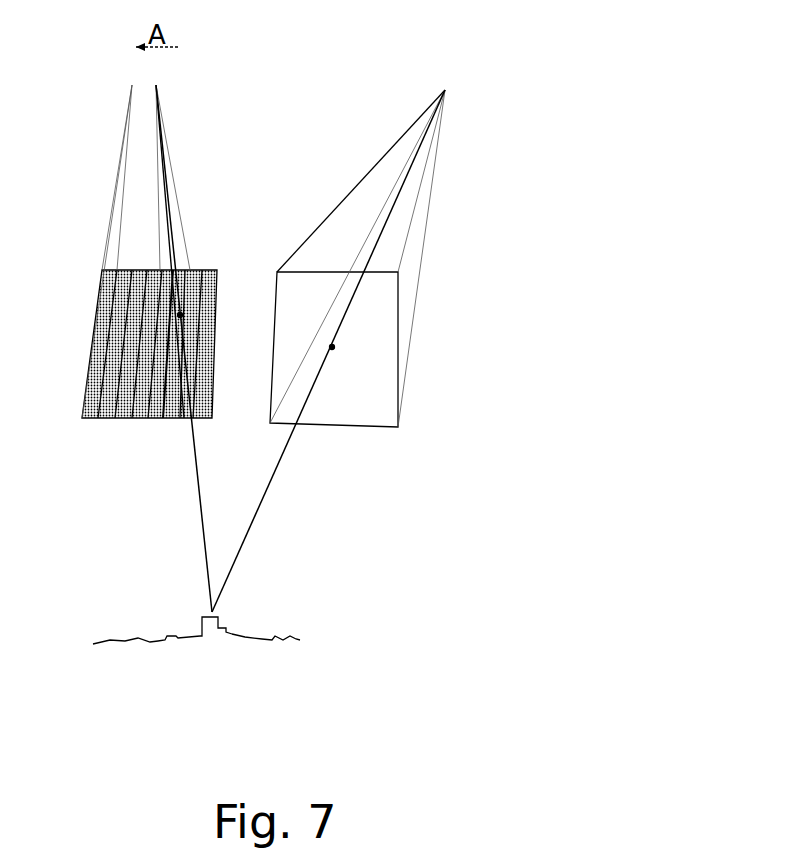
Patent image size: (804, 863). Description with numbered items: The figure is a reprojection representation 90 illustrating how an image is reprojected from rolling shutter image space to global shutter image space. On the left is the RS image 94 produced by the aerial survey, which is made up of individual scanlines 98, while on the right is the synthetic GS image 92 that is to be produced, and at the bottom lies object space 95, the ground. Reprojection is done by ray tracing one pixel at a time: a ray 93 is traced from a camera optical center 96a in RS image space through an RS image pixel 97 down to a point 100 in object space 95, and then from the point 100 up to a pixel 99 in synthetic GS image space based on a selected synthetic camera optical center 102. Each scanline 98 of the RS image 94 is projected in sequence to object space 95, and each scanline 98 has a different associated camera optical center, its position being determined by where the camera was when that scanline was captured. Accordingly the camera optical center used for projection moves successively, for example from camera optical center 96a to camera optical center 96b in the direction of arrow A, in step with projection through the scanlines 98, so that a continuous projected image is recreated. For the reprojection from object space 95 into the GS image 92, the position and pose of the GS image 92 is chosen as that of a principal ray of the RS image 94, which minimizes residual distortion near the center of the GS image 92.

The reprojection representation 90 is at (607, 78).
The synthetic GS image 92 is at (382, 430).
The ray 93 is at (270, 490).
The RS image 94 is at (88, 420).
The object space 95 is at (300, 638).
The camera optical center 96a is at (156, 85).
The camera optical center 96b is at (132, 85).
The RS image pixel 97 is at (180, 315).
The scanlines 98 is at (197, 270).
The pixel 99 is at (332, 347).
The point 100 is at (215, 608).
The synthetic camera optical center 102 is at (445, 90).